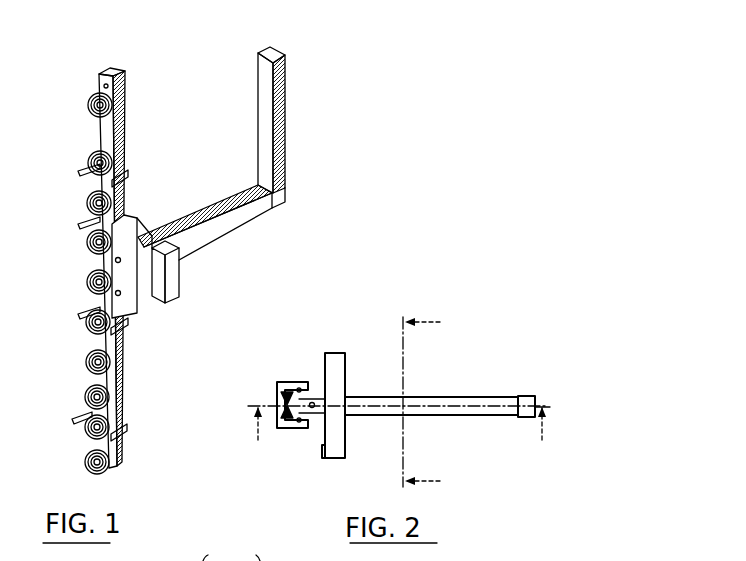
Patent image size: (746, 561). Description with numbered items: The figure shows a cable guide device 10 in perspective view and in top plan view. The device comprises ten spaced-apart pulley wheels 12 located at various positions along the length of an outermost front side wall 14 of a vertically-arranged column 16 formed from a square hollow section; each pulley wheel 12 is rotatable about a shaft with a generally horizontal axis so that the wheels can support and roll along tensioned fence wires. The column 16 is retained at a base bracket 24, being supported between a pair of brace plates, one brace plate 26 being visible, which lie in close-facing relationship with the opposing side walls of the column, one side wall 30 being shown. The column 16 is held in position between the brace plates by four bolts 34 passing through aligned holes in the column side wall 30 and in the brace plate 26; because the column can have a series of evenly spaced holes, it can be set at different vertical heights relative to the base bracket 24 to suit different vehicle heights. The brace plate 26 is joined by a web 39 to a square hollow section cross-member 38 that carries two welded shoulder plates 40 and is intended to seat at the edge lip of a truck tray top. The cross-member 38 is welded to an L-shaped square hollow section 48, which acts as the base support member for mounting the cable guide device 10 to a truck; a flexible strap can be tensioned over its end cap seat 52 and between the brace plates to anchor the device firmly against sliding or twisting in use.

In FIG. 1, the cable guide device 10 is at (250, 245).
In FIG. 2, the cable guide device 10 is at (402, 432).
In FIG. 1, the pulley wheels 12 is at (83, 453).
In FIG. 2, the pulley wheels 12 is at (278, 400).
In FIG. 1, the outermost front side wall 14 is at (107, 135).
In FIG. 1, the column 16 is at (102, 68).
In FIG. 2, the column 16 is at (305, 400).
In FIG. 1, the base bracket 24 is at (212, 173).
In FIG. 1, the brace plate 26 is at (135, 313).
In FIG. 1, the side wall 30 is at (115, 382).
In FIG. 1, the bolts 34 is at (122, 213).
In FIG. 1, the cross-member 38 is at (239, 223).
In FIG. 2, the cross-member 38 is at (337, 372).
In FIG. 1, the web 39 is at (138, 240).
In FIG. 1, the shoulder plates 40 is at (170, 306).
In FIG. 1, the L-shaped square hollow section 48 is at (240, 215).
In FIG. 2, the L-shaped square hollow section 48 is at (472, 398).
In FIG. 1, the end cap seat 52 is at (283, 52).
In FIG. 2, the end cap seat 52 is at (533, 400).